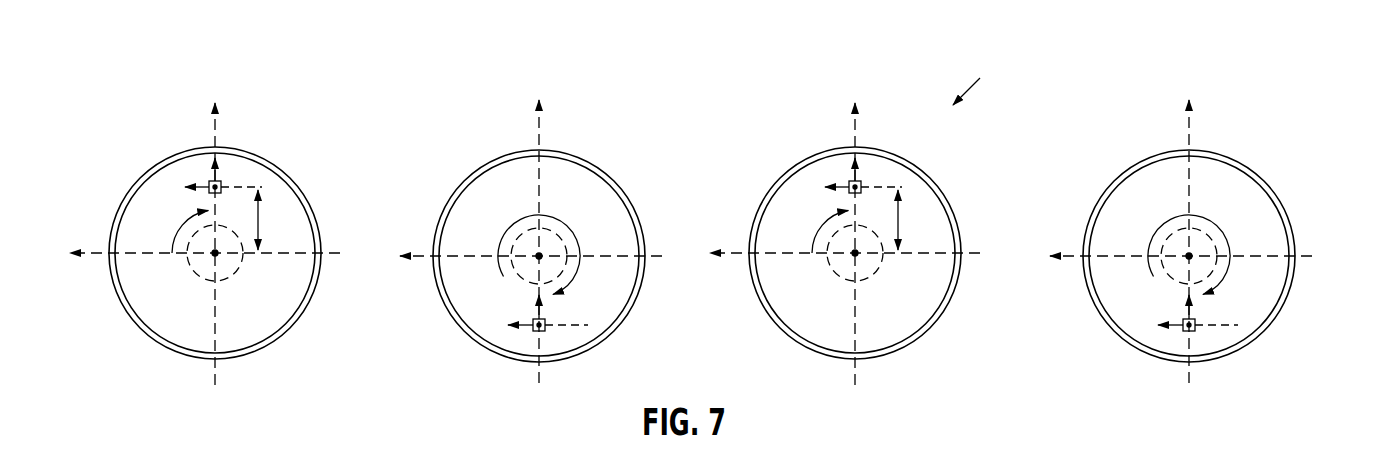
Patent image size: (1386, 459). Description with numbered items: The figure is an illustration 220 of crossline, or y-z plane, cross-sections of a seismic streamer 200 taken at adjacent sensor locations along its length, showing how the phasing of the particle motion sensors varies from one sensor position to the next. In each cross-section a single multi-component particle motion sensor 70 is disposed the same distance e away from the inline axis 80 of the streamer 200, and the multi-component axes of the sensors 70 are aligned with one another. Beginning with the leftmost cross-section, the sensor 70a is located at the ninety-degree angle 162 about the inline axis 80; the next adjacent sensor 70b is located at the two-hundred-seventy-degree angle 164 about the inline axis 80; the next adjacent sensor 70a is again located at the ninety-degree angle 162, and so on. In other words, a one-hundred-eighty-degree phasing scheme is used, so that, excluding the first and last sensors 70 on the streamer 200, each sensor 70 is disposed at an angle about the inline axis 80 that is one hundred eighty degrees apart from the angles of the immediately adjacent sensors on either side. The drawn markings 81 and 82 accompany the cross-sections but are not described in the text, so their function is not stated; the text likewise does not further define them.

The multi-component particle motion sensor 70 is at (716, 251).
The sensor at 90° angle 70a is at (587, 185).
The sensor at 270° angle 70b is at (907, 354).
The inline axis 80 is at (769, 242).
The Y-axis direction 81 is at (674, 257).
The circular tool path 82 is at (646, 256).
The 90° angle 162 is at (461, 256).
The 270° angle 164 is at (830, 215).
The seismic streamer 200 is at (735, 254).
The illustration 220 is at (984, 82).